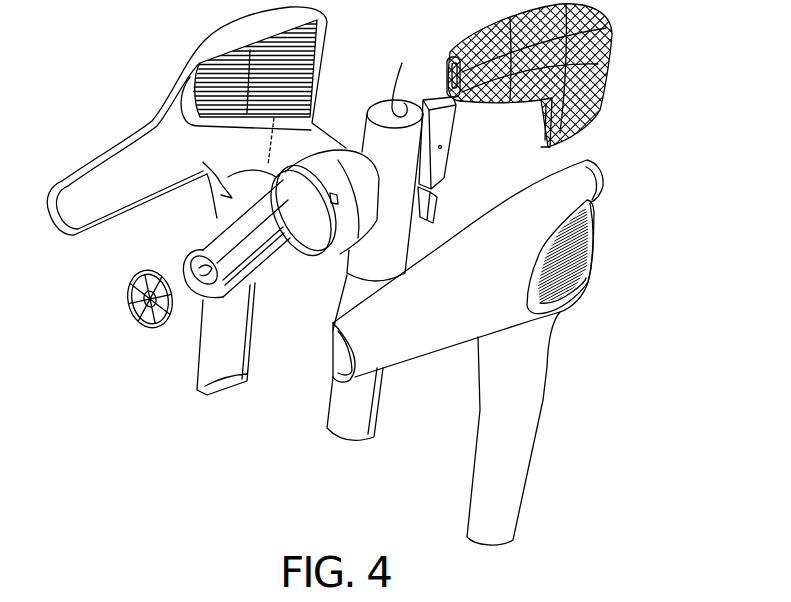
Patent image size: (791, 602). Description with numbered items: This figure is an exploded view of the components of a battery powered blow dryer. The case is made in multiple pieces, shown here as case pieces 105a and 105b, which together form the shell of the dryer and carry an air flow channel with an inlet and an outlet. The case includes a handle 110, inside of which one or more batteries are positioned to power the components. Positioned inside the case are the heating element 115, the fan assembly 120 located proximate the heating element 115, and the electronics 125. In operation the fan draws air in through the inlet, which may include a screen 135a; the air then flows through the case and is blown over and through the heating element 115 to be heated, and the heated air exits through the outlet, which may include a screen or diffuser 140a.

The case piece 105a is at (100, 147).
The case piece 105b is at (433, 346).
The handle 110 is at (328, 413).
The heating element 115 is at (198, 241).
The fan assembly 120 is at (328, 152).
The electronics 125 is at (436, 94).
The screen 135a is at (610, 26).
The screen or diffuser 140a is at (135, 320).